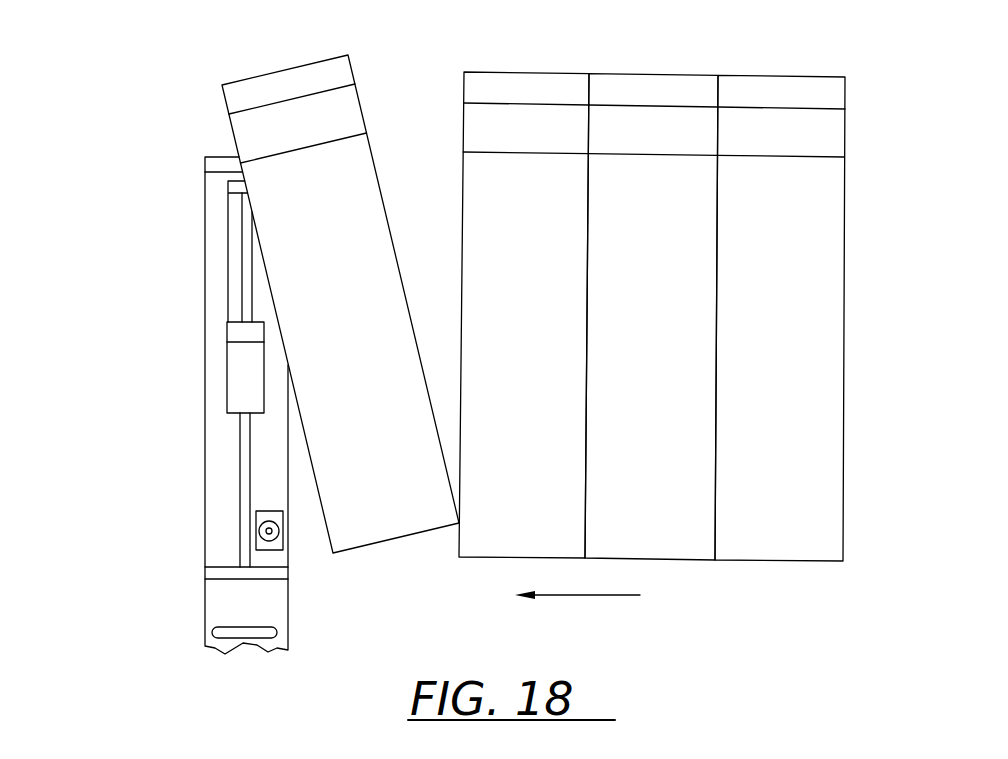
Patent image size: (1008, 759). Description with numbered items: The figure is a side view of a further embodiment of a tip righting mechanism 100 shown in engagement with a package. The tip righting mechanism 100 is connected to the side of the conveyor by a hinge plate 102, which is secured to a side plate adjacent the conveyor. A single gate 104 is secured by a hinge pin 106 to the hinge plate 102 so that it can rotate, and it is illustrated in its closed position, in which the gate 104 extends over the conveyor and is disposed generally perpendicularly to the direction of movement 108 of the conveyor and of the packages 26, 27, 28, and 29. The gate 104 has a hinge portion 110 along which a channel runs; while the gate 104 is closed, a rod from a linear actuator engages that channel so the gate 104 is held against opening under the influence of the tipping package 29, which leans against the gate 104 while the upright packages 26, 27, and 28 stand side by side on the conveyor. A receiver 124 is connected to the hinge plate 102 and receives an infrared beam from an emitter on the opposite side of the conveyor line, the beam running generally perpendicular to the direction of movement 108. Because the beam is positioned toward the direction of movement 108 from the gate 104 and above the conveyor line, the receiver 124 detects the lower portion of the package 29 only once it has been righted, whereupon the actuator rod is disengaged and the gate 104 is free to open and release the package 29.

The tip righting mechanism 100 is at (166, 162).
The hinge plate 102 is at (217, 538).
The gate 104 is at (250, 290).
The hinge pin 106 is at (243, 485).
The hinge portion 110 is at (235, 223).
The receiver 124 is at (278, 545).
The package 29 is at (360, 347).
The package 28 is at (540, 345).
The package 27 is at (660, 336).
The package 26 is at (792, 328).
The direction of movement 108 is at (603, 595).